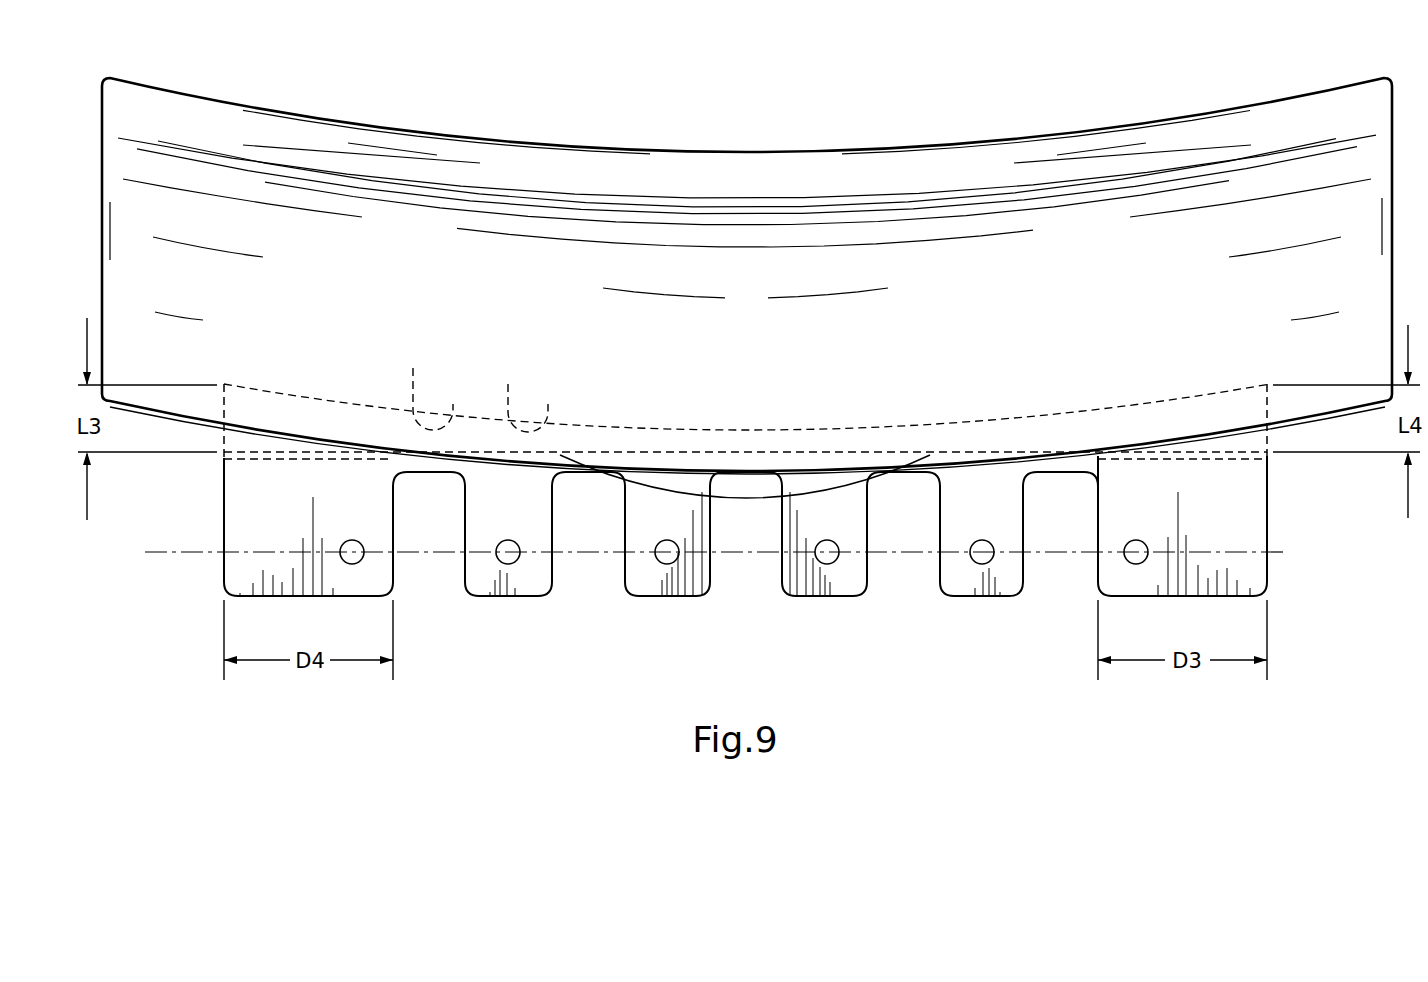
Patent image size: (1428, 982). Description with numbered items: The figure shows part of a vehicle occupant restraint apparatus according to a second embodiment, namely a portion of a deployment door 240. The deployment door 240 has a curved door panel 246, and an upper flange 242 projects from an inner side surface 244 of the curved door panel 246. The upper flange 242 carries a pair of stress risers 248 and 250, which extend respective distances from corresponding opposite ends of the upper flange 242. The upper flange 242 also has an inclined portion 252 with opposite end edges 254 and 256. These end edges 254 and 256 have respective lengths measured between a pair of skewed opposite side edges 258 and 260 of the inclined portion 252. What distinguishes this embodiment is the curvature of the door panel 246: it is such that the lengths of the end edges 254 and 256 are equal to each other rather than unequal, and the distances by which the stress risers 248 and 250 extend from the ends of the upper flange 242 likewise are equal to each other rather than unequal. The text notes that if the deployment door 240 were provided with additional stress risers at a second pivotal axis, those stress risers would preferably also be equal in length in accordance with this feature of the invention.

The deployment door 240 is at (644, 114).
The upper flange 242 is at (1272, 509).
The inner side surface 244 is at (426, 386).
The curved door panel 246 is at (702, 175).
The stress riser 248 is at (1095, 440).
The stress riser 250 is at (316, 463).
The inclined portion 252 is at (243, 445).
The end edge 254 is at (224, 434).
The end edge 256 is at (1268, 425).
The skewed side edge 258 is at (647, 452).
The skewed side edge 260 is at (525, 397).